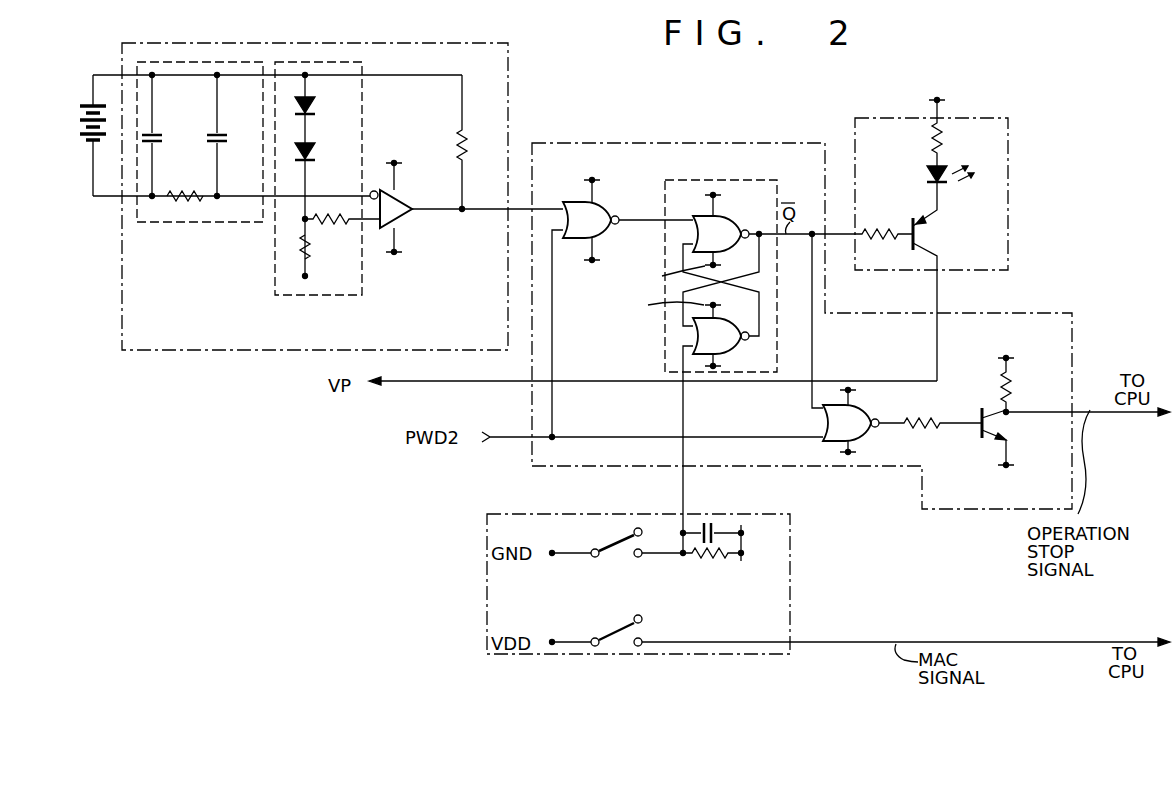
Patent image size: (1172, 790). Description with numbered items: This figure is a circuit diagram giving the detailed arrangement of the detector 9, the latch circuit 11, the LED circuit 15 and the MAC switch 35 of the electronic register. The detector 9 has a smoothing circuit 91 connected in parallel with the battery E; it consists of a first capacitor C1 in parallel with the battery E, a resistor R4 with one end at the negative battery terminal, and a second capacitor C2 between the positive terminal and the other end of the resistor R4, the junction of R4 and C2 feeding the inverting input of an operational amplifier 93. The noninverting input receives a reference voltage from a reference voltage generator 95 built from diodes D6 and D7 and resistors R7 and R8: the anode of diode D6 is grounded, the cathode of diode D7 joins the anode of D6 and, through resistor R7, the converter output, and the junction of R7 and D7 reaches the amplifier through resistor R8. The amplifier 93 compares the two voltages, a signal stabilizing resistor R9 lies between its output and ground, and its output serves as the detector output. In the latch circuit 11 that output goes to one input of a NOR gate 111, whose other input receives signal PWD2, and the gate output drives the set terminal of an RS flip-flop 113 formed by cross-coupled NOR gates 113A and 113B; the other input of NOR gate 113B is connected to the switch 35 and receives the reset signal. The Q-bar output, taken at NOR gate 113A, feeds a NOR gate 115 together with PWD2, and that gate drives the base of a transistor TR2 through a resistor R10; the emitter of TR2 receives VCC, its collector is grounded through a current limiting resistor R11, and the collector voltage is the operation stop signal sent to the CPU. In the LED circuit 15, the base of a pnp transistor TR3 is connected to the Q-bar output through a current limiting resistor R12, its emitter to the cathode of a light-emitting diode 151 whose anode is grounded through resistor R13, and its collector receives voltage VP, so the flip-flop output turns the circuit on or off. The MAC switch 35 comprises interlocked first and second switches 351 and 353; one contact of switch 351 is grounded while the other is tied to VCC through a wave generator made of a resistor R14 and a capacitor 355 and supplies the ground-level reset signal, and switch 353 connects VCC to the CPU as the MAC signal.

The detector 9 is at (508, 102).
The smoothing circuit 91 is at (152, 224).
The operational amplifier 93 is at (410, 222).
The reference voltage generator 95 is at (306, 296).
The latch circuit 11 is at (768, 144).
The NOR gate 111 is at (613, 212).
The RS flip-flop 113 is at (753, 180).
The NOR gate 113A is at (691, 242).
The NOR gate 113B is at (692, 343).
The NOR gate 115 is at (820, 418).
The LED circuit 15 is at (1008, 234).
The light-emitting diode 151 is at (922, 178).
The MAC switch 35 is at (487, 632).
The first switch 351 is at (600, 543).
The second switch 353 is at (648, 634).
The capacitor 355 is at (735, 518).
The battery E is at (86, 103).
The first capacitor C1 is at (157, 139).
The second capacitor C2 is at (222, 139).
The resistor R4 is at (189, 192).
The diode D6 is at (316, 108).
The diode D7 is at (312, 152).
The resistor R7 is at (298, 242).
The resistor R8 is at (332, 223).
The signal stabilizing resistor R9 is at (453, 148).
The resistor R10 is at (926, 428).
The current limiting resistor R11 is at (1012, 390).
The current limiting resistor R12 is at (876, 227).
The resistor R13 is at (948, 150).
The resistor R14 is at (710, 562).
The transistor TR2 is at (1008, 434).
The pnp transistor TR3 is at (926, 240).